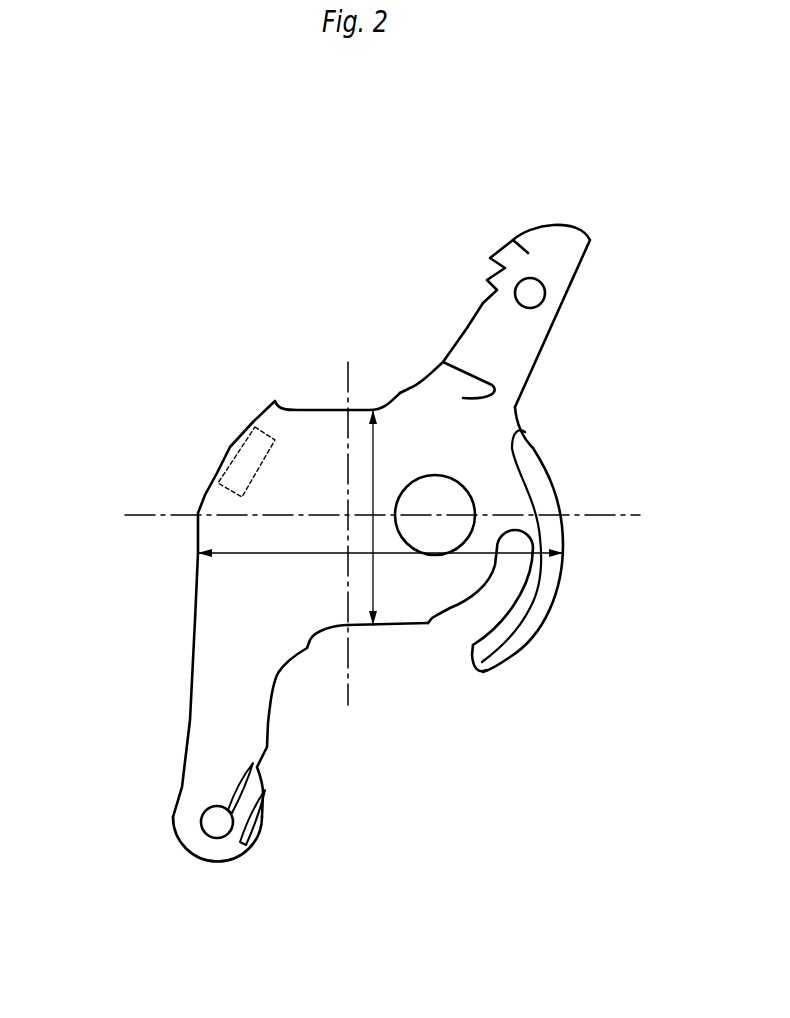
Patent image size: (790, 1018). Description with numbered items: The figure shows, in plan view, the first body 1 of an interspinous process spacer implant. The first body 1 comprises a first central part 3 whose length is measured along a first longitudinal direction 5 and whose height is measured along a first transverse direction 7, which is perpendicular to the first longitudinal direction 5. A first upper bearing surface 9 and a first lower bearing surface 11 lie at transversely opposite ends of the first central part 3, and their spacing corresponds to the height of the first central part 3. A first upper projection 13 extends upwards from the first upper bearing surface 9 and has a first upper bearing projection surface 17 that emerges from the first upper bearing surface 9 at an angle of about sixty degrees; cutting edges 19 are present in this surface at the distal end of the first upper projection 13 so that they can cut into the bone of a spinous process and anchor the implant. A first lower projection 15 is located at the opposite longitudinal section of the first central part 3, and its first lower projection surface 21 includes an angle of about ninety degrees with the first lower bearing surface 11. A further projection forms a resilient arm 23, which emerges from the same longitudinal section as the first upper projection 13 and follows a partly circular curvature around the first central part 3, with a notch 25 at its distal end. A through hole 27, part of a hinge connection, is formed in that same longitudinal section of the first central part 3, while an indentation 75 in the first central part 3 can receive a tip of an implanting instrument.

The first body 1 is at (374, 508).
The first central part 3 is at (303, 619).
The first longitudinal direction 5 is at (356, 550).
The first transverse direction 7 is at (319, 502).
The first upper bearing surface 9 is at (303, 370).
The first lower bearing surface 11 is at (401, 681).
The first upper projection 13 is at (559, 316).
The first lower projection 15 is at (169, 806).
The first upper bearing projection surface 17 is at (440, 328).
The cutting edges 19 is at (460, 229).
The first lower projection surface 21 is at (311, 721).
The resilient arm 23 is at (576, 539).
The band tip 25 is at (512, 695).
The through hole 27 is at (518, 472).
The indentation 75 is at (213, 448).